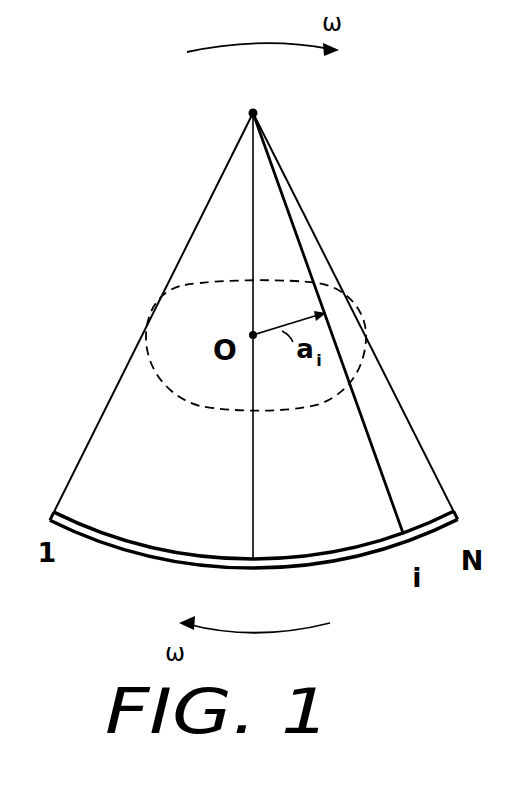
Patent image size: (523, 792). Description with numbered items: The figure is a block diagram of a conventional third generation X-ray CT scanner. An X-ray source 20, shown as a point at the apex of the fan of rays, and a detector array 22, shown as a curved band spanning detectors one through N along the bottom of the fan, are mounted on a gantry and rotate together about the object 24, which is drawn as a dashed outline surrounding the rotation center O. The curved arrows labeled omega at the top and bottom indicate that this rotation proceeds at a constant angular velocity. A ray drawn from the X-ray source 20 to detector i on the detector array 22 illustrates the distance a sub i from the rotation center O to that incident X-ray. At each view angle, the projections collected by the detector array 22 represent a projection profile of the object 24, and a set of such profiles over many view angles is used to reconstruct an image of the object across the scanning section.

The X-ray source 20 is at (270, 105).
The detector array 22 is at (470, 510).
The object 24 is at (150, 391).